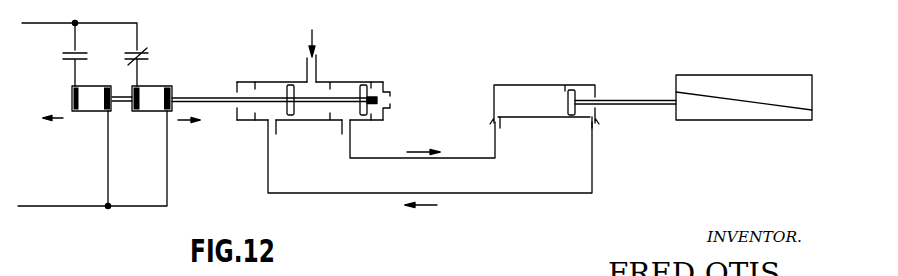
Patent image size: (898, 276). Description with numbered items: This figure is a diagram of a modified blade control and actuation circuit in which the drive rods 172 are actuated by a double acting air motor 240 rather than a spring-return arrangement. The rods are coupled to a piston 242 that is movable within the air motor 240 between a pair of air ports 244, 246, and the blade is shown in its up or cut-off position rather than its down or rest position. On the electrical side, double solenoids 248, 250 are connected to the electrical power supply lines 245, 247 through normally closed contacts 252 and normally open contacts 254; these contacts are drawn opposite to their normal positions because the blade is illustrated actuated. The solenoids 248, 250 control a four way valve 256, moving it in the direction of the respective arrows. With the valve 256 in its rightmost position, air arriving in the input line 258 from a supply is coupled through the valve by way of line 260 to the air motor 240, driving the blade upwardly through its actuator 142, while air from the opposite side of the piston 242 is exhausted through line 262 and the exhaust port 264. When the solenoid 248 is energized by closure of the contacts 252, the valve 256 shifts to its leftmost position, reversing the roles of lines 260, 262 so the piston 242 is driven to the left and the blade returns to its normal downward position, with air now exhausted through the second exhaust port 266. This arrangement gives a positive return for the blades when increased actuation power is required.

The actuator 142 is at (726, 110).
The drive rods 172 is at (640, 101).
The double acting air motor 240 is at (531, 85).
The piston 242 is at (569, 89).
The air port 244 is at (503, 123).
The air port 246 is at (597, 123).
The electrical power supply line 245 is at (68, 22).
The electrical power supply line 247 is at (37, 206).
The solenoid 248 is at (92, 112).
The solenoid 250 is at (153, 112).
The normally closed contacts 252 is at (63, 51).
The normally open contacts 254 is at (143, 51).
The four way valve 256 is at (366, 67).
The input line 258 is at (307, 58).
The line 260 is at (397, 157).
The line 262 is at (366, 192).
The exhaust port 264 is at (236, 92).
The second exhaust port 266 is at (389, 97).